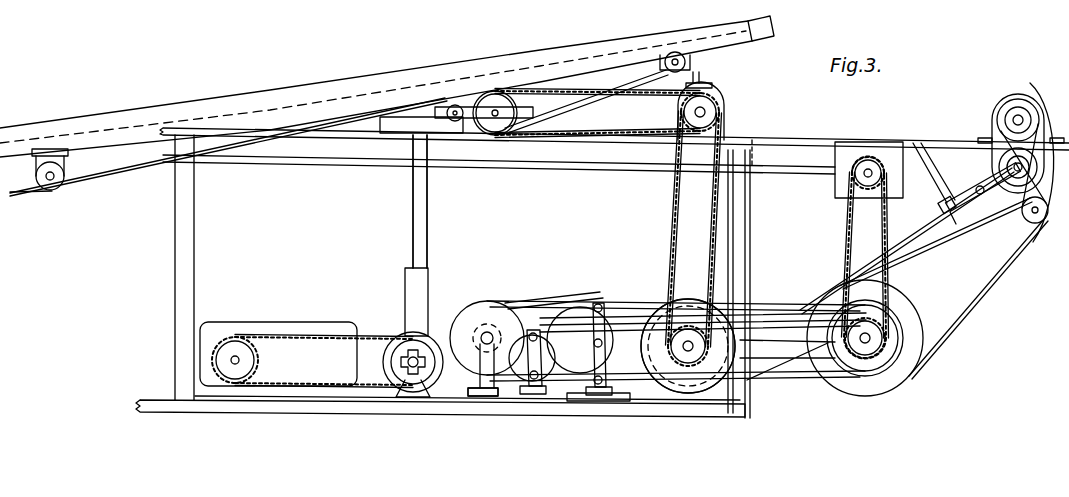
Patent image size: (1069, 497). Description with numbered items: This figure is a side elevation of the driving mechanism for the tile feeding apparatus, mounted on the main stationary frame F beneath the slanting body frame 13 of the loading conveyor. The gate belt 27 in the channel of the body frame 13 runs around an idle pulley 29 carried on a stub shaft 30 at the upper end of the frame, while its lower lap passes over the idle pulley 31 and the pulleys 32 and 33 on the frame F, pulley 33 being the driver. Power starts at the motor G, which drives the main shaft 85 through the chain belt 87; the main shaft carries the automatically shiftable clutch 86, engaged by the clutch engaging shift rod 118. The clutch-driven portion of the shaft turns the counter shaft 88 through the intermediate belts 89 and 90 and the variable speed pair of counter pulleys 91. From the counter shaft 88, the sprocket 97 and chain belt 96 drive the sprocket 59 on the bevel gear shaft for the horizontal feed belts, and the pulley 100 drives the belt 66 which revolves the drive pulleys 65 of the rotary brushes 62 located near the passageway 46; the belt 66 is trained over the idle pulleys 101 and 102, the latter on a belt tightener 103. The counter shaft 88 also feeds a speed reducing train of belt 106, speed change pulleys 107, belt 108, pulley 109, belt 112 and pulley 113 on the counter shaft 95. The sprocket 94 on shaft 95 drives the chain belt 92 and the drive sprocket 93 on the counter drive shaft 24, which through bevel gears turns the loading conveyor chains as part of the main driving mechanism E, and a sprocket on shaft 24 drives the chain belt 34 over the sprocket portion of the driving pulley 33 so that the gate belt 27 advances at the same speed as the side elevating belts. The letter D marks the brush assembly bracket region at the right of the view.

The body frame 13 is at (348, 80).
The gate belt 27 is at (182, 118).
The idle pulley 31 is at (50, 190).
The main stationary frame F is at (595, 160).
The clutch engaging shift rod 118 is at (428, 232).
The pulley 32 is at (466, 122).
The driving pulley 33 is at (503, 130).
The chain belt 34 is at (560, 96).
The stub shafts 30 is at (677, 56).
The idle pulley 29 is at (702, 68).
The drive sprocket 93 is at (718, 118).
The counter drive shaft 24 is at (716, 110).
The chain belt 92 is at (668, 237).
The motor G is at (278, 354).
The chain belt 87 is at (287, 335).
The automatically shiftable clutch 86 is at (400, 342).
The main shaft 85 is at (415, 358).
The pulley 109 is at (482, 302).
The intermediate belt 90 is at (460, 392).
The variable speed pair of counter pulleys 91 is at (525, 368).
The speed change pulleys 107 is at (583, 354).
The belt 112 is at (580, 312).
The main driving mechanism E is at (537, 306).
The belt 108 is at (510, 300).
The intermediate belt 89 is at (787, 318).
The belt 106 is at (772, 323).
The sprocket 94 is at (698, 356).
The counter shaft 95 is at (686, 352).
The pulley 113 is at (666, 316).
The sprocket 59 is at (872, 166).
The chain belt 96 is at (845, 245).
The sprocket 97 is at (878, 330).
The counter shaft 88 is at (862, 345).
The pulley 100 is at (900, 368).
The belt 66 is at (985, 291).
The idle pulley 101 is at (1037, 225).
The double pulley bracket D is at (1000, 106).
The rotary brushes 62 is at (1015, 99).
The drive pulleys 65 is at (1019, 158).
The passageway 46 is at (923, 140).
The idle pulley 102 is at (965, 182).
The belt tightener 103 is at (948, 212).